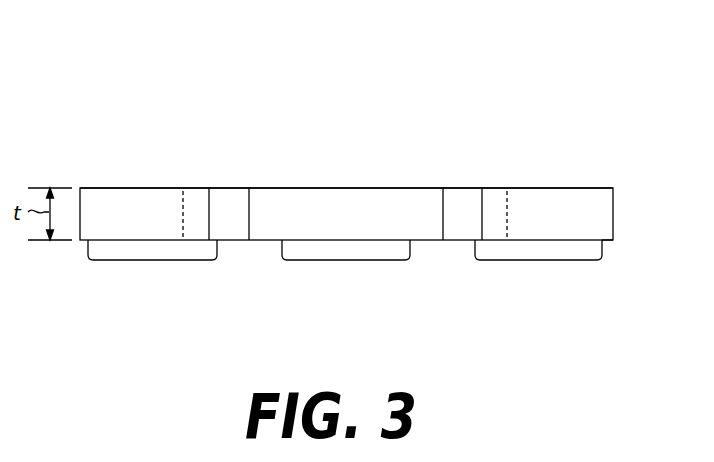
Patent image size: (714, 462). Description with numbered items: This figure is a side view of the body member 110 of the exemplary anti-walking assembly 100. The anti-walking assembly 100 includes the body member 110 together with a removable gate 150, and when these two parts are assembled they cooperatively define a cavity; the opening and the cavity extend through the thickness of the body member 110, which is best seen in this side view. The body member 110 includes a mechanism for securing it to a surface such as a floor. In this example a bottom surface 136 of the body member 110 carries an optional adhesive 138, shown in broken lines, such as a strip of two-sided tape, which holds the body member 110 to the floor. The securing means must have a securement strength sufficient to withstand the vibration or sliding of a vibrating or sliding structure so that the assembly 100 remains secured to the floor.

The anti-walking assembly 100 is at (280, 153).
The body member 110 is at (130, 202).
The bottom surface 136 is at (605, 240).
The adhesive 138 is at (557, 260).
The removable gate 150 is at (262, 230).